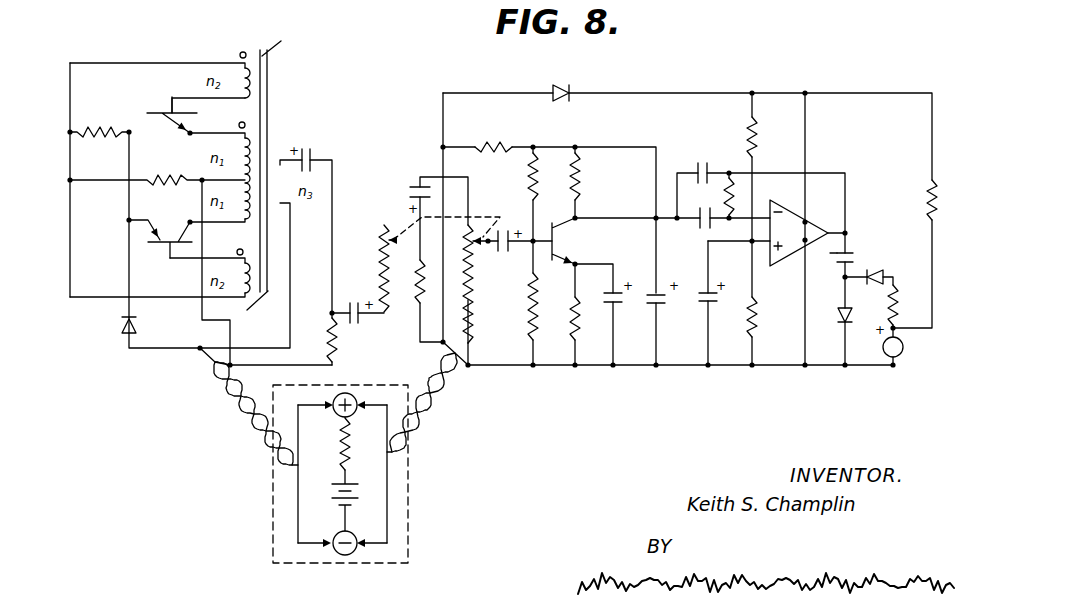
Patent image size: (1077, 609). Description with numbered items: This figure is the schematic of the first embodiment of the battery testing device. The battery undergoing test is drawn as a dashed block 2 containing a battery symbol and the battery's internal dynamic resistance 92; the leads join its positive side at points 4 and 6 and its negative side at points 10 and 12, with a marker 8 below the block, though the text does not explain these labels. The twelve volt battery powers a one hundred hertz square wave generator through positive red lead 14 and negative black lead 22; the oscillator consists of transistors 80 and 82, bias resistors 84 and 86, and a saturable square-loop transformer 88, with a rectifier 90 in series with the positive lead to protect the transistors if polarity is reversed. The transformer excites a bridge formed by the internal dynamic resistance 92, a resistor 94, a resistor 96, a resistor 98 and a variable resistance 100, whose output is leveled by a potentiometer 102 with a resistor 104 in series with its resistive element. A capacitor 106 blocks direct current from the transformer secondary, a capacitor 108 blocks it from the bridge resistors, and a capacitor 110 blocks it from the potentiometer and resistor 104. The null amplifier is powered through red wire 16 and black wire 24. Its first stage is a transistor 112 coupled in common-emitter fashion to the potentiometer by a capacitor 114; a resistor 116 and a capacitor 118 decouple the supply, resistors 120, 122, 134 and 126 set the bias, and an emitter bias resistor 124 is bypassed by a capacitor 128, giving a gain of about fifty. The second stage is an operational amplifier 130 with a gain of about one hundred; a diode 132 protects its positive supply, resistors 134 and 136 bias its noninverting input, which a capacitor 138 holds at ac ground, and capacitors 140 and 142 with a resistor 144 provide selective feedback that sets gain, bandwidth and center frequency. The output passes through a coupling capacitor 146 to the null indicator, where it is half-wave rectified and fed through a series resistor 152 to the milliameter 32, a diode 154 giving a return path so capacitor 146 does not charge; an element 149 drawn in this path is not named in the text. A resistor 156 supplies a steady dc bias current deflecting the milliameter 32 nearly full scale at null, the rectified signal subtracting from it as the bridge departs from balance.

The summing network 2 is at (345, 392).
The positive input lead 4 is at (330, 402).
The positive input lead 6 is at (358, 400).
The negative terminal 8 is at (345, 556).
The negative input lead 10 is at (322, 548).
The negative input lead 12 is at (368, 550).
The positive red lead 14 is at (198, 352).
The red positive wire 16 is at (445, 347).
The negative black lead 22 is at (200, 378).
The black negative wire 24 is at (462, 372).
The milliameter 32 is at (902, 350).
The transistor 80 is at (157, 110).
The transistor 82 is at (150, 245).
The bias resistor 84 is at (100, 128).
The bias resistor 86 is at (166, 173).
The saturable transformer 88 is at (270, 50).
The rectifier 90 is at (120, 322).
The internal dynamic resistance 92 is at (345, 460).
The resistor 94 is at (412, 305).
The resistor 96 is at (327, 320).
The resistor 98 is at (387, 290).
The variable resistance 100 is at (375, 225).
The potentiometer 102 is at (474, 222).
The resistor 104 is at (474, 320).
The capacitor 106 is at (305, 148).
The capacitor 108 is at (352, 302).
The capacitor 110 is at (415, 177).
The transistor 112 is at (568, 240).
The capacitor 114 is at (500, 255).
The resistor 116 is at (495, 145).
The capacitor 118 is at (672, 302).
The resistor 120 is at (526, 167).
The resistor 122 is at (540, 337).
The emitter bias resistor 124 is at (583, 333).
The resistor 126 is at (583, 170).
The capacitor 128 is at (630, 300).
The operational amplifier 130 is at (825, 208).
The diode 132 is at (568, 87).
The resistor 134 is at (752, 127).
The resistor 136 is at (755, 320).
The capacitor 138 is at (725, 302).
The capacitor 140 is at (677, 222).
The capacitor 142 is at (690, 165).
The resistor 144 is at (742, 170).
The capacitor 146 is at (855, 248).
The resistor 149 is at (888, 280).
The series resistor 152 is at (880, 283).
The diode 154 is at (840, 312).
The resistor 156 is at (930, 185).